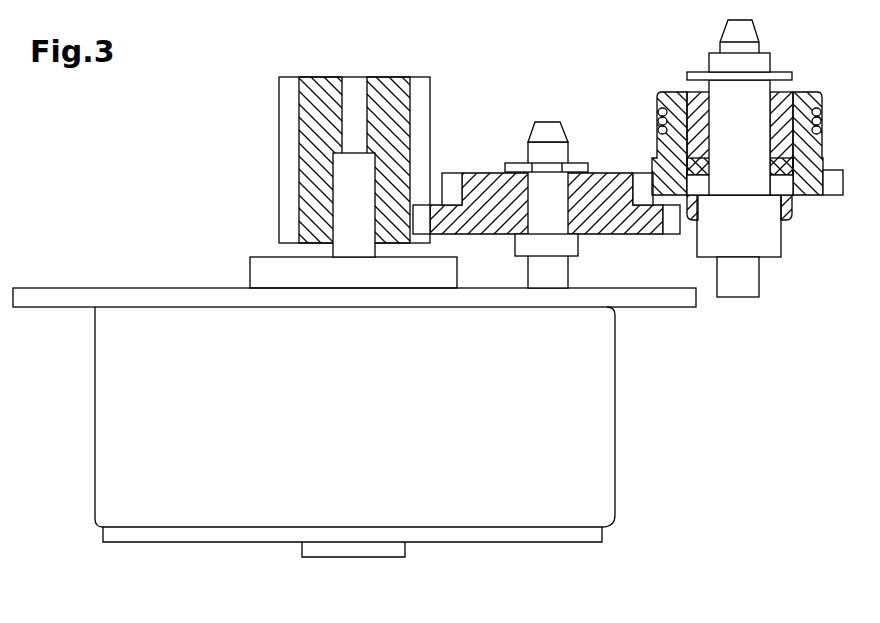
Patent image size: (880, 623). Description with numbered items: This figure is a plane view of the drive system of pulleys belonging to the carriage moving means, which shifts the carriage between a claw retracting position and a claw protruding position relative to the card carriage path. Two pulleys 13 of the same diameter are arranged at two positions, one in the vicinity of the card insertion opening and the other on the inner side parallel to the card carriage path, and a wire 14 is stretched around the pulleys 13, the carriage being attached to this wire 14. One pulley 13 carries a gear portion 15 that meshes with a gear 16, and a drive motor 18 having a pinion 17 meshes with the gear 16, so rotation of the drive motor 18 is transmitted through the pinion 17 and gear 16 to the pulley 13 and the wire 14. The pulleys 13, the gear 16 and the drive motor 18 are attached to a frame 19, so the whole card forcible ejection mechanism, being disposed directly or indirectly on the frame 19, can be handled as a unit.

The pulley 13 is at (803, 103).
The wire 14 is at (822, 117).
The gear portion 15 is at (837, 187).
The gear 16 is at (607, 187).
The pinion 17 is at (381, 90).
The drive motor 18 is at (455, 508).
The frame 19 is at (52, 295).